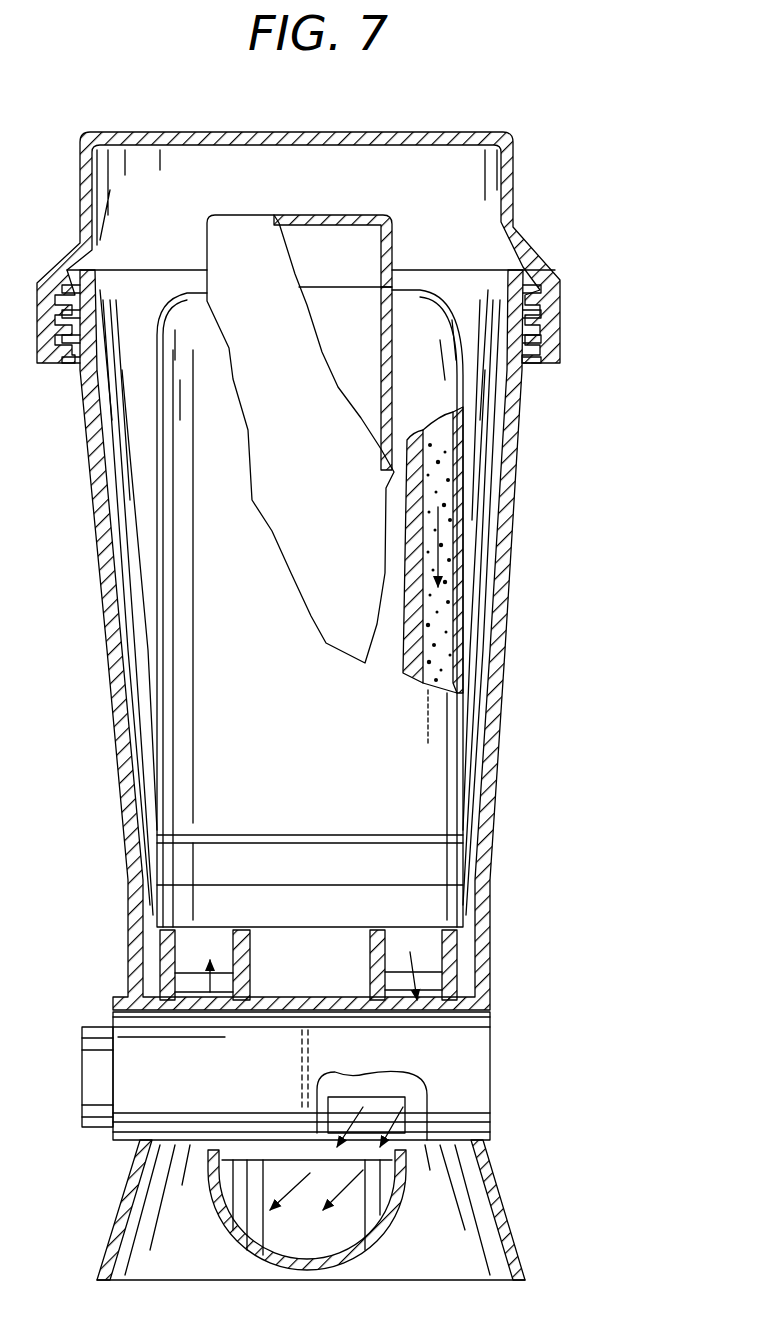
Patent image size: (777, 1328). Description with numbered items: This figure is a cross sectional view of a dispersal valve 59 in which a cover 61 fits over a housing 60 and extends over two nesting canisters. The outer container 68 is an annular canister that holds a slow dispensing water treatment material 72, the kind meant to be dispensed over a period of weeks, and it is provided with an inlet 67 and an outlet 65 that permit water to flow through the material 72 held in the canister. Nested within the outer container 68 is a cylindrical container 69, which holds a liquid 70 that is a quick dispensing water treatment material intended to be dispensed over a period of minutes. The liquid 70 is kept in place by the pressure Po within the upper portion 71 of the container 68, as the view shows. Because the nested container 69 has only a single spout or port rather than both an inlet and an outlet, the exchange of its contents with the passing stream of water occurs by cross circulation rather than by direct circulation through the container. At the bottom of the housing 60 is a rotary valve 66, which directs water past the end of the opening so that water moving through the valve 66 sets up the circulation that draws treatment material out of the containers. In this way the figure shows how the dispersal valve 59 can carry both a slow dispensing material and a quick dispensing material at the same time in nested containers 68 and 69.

The dispersal valve 59 is at (558, 130).
The cover 61 is at (515, 208).
The housing 60 is at (513, 547).
The outer container 68 is at (418, 775).
The cylindrical container 69 is at (250, 239).
The liquid 70 is at (361, 352).
The upper portion 71 is at (326, 273).
The water treatment material 72 is at (443, 477).
The inlet 67 is at (203, 950).
The outlet 65 is at (428, 937).
The rotary valve 66 is at (467, 1077).